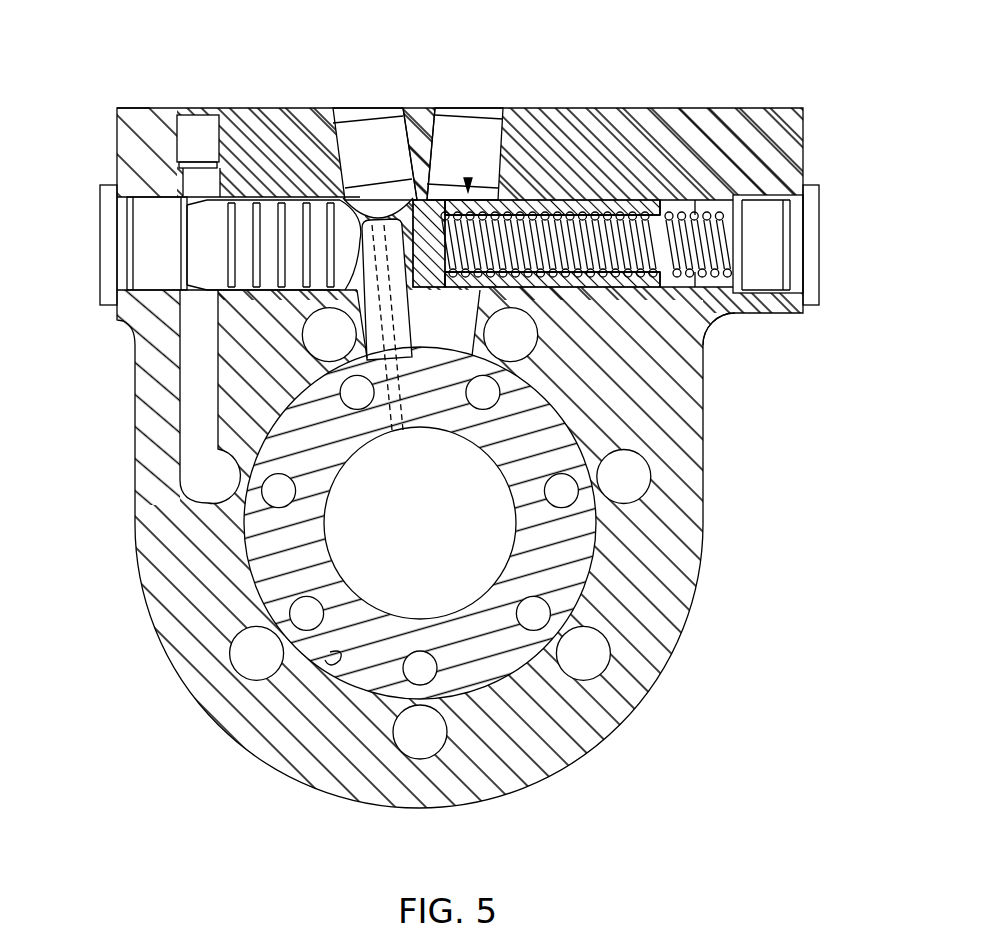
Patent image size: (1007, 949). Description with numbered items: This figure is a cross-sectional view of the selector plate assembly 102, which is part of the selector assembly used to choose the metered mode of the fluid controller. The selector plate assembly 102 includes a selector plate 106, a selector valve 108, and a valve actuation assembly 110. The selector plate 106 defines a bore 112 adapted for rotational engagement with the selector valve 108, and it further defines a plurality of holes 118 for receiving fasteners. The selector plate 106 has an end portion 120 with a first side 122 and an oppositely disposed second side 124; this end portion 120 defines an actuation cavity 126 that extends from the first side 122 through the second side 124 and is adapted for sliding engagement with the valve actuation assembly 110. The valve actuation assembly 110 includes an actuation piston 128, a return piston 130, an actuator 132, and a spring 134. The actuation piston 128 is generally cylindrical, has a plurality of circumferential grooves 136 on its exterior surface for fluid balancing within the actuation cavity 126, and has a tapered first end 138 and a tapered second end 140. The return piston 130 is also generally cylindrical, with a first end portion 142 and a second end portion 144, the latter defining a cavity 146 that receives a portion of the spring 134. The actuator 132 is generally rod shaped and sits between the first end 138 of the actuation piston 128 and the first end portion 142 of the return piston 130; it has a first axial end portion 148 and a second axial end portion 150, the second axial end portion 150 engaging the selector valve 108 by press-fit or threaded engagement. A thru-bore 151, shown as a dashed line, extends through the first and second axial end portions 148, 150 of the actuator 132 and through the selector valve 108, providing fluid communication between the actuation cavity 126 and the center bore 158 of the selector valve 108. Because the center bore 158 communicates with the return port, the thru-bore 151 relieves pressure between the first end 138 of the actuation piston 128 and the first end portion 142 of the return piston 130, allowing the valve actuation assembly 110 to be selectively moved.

The selector plate assembly 102 is at (98, 116).
The selector plate 106 is at (703, 468).
The selector valve 108 is at (594, 552).
The valve actuation assembly 110 is at (450, 178).
The bore 112 is at (337, 658).
The holes 118 is at (607, 675).
The end portion 120 is at (682, 207).
The first side 122 is at (116, 152).
The second side 124 is at (804, 138).
The actuation cavity 126 is at (748, 197).
The actuation piston 128 is at (293, 203).
The return piston 130 is at (565, 202).
The actuator 132 is at (412, 300).
The spring 134 is at (730, 294).
The circumferential grooves 136 is at (256, 205).
The first end 138 is at (372, 216).
The second end 140 is at (205, 213).
The first end portion 142 is at (478, 168).
The second end portion 144 is at (650, 203).
The cavity 146 is at (612, 262).
The first axial end portion 148 is at (423, 203).
The second axial end portion 150 is at (420, 340).
The thru-bore 151 is at (408, 432).
The center bore 158 is at (330, 548).